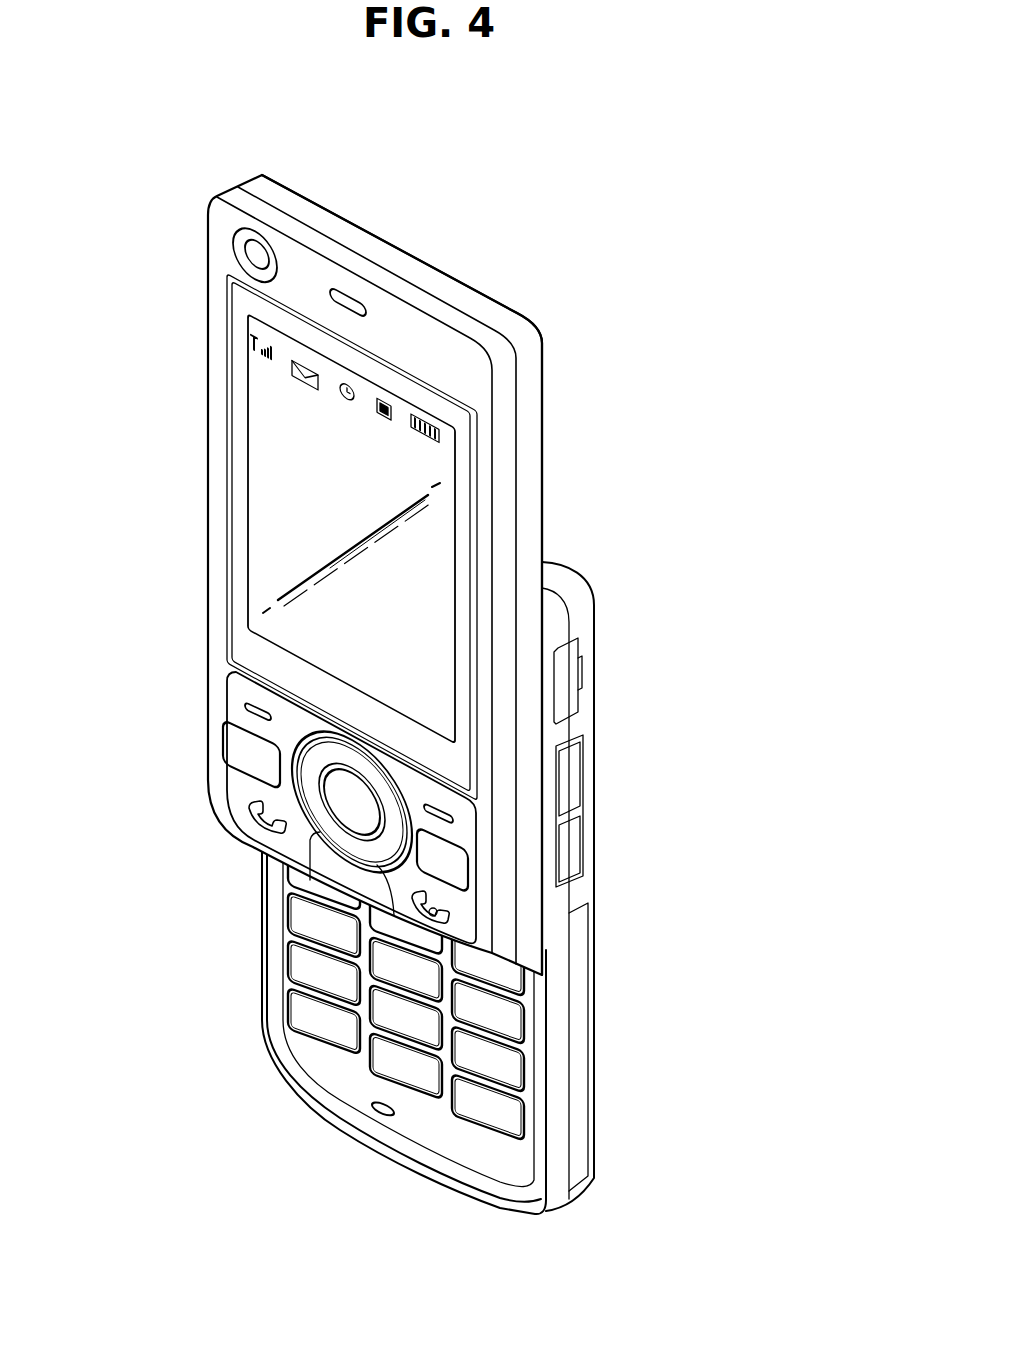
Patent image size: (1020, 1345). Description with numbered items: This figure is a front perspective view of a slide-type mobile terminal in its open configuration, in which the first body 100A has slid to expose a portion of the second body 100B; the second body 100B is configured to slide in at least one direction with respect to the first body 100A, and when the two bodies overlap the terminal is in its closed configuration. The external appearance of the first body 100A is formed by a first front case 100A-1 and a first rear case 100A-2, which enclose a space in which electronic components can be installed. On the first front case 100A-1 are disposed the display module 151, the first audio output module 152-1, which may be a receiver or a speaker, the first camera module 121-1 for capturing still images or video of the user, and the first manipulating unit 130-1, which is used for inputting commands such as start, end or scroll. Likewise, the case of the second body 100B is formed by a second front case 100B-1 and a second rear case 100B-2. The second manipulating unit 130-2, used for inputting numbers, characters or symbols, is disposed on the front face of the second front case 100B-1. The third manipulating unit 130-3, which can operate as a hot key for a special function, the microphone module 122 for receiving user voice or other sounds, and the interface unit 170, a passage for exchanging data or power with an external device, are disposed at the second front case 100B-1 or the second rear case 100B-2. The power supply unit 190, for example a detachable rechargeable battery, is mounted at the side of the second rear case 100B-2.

The first body 100A is at (172, 351).
The first front case 100A-1 is at (507, 450).
The first rear case 100A-2 is at (528, 403).
The second body 100B is at (257, 939).
The second front case 100B-1 is at (552, 607).
The second rear case 100B-2 is at (582, 635).
The first camera module 121-1 is at (263, 253).
The microphone module 122 is at (383, 1117).
The first manipulating unit 130-1 is at (243, 745).
The second manipulating unit 130-2 is at (298, 1007).
The third manipulating unit 130-3 is at (577, 845).
The display module 151 is at (267, 465).
The first audio output module 152-1 is at (348, 298).
The interface unit 170 is at (570, 675).
The power supply unit 190 is at (587, 1020).